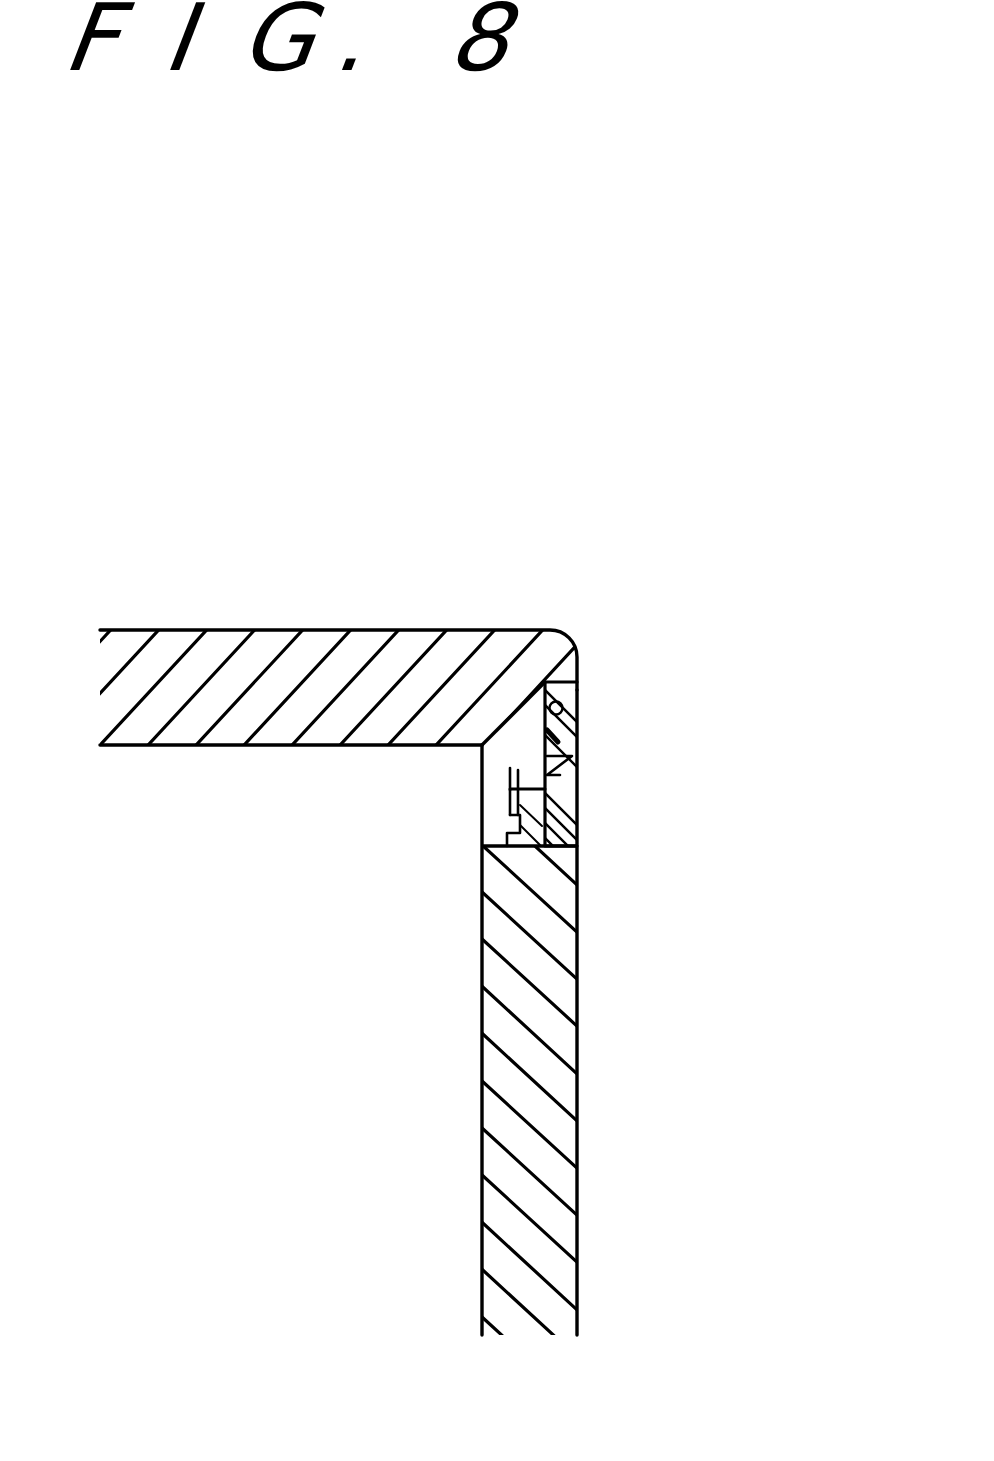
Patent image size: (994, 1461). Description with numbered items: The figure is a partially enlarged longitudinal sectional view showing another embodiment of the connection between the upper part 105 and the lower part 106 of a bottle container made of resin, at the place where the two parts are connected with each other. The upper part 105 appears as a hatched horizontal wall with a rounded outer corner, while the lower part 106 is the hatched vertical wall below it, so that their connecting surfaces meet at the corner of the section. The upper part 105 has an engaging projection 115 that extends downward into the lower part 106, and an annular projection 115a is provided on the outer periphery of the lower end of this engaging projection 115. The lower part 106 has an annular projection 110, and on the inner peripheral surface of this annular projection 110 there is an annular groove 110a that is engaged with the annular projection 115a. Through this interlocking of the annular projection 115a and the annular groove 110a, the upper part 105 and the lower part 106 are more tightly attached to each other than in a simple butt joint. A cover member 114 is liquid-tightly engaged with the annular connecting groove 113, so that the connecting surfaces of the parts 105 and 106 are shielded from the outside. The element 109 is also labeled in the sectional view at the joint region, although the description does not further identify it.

The upper part 105 is at (300, 436).
The lower part 106 is at (577, 1117).
The seal member 109 is at (530, 704).
The annular projection 110 is at (580, 797).
The annular groove 110a is at (567, 820).
The annular connecting groove 113 is at (486, 749).
The cover member 114 is at (565, 716).
The engaging projection 115 is at (545, 732).
The annular projection 115a is at (187, 1018).